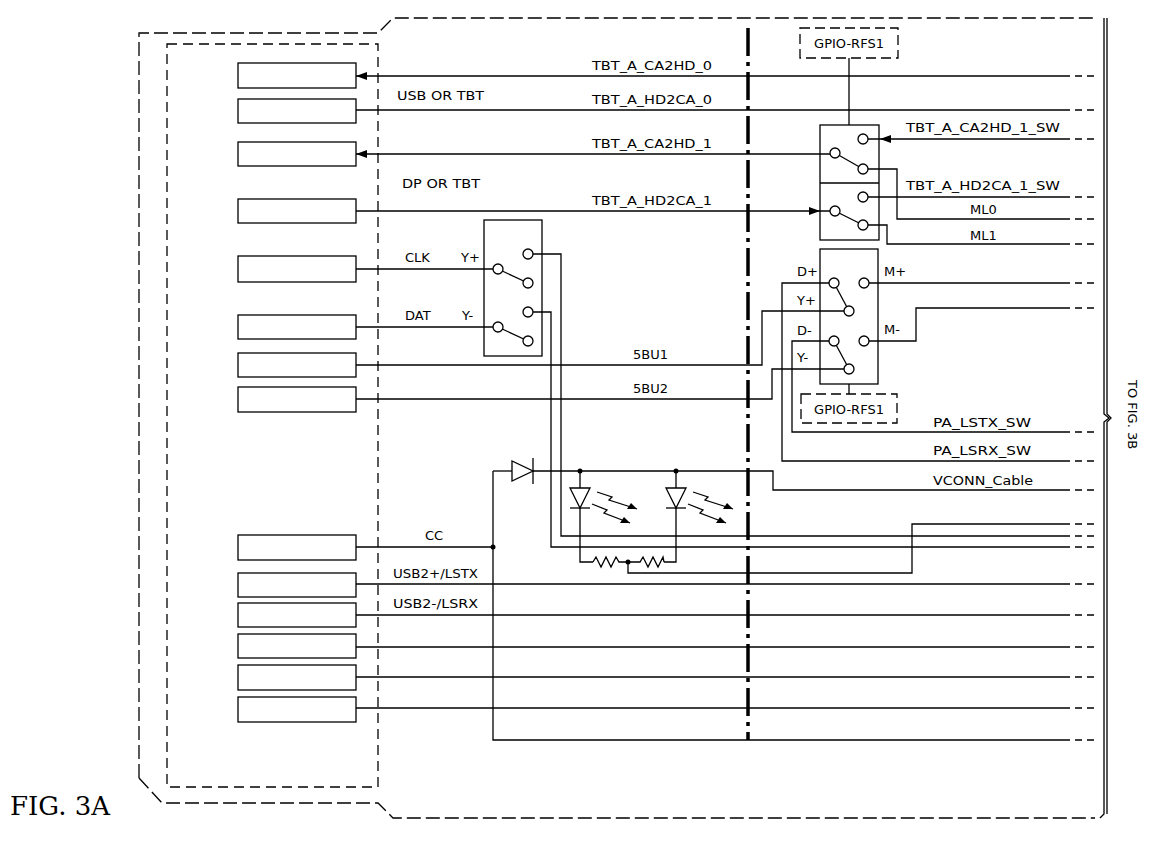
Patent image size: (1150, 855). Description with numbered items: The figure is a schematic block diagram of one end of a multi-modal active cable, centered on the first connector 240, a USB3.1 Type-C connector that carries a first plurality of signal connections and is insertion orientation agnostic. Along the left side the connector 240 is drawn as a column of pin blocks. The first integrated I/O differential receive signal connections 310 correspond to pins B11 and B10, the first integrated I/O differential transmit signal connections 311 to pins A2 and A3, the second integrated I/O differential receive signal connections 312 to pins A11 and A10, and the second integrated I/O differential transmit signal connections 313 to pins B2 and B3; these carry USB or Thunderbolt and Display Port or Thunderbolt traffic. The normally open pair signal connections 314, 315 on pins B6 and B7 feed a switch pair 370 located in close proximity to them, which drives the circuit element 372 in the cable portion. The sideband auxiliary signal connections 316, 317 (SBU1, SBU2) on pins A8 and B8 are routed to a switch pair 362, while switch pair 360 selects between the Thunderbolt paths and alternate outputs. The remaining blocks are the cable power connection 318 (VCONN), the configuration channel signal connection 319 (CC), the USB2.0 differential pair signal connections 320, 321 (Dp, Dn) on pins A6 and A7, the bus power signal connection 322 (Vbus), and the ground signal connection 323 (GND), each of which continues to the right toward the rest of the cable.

The first connector 240 is at (385, 760).
The first integrated I/O differential receive signal connections 310 is at (238, 75).
The first integrated I/O differential transmit signal connections 311 is at (238, 110).
The second integrated I/O differential receive signal connections 312 is at (238, 153).
The second integrated I/O differential transmit signal connections 313 is at (238, 211).
The first USB Type-C normally open pair signal connection 314 is at (238, 268).
The first USB Type-C normally open pair signal connection 315 is at (238, 326).
The sideband auxiliary signal connection 316 is at (238, 364).
The sideband auxiliary signal connection 317 is at (238, 398).
The first cable power connection 318 is at (238, 550).
The configuration channel signal connection 319 is at (238, 586).
The USB2.0 differential pair signal connection 320 is at (238, 616).
The USB2.0 differential pair signal connection 321 is at (238, 646).
The bus power signal connection 322 is at (238, 677).
The ground signal connection 323 is at (238, 708).
The switch pair 360 is at (820, 137).
The switch pair 362 is at (878, 355).
The switch pair 370 is at (484, 335).
The circuit element 372 is at (612, 457).